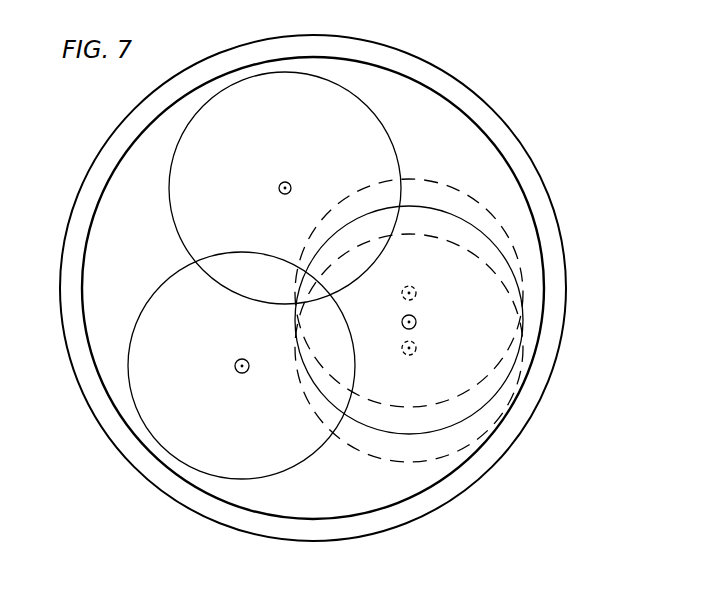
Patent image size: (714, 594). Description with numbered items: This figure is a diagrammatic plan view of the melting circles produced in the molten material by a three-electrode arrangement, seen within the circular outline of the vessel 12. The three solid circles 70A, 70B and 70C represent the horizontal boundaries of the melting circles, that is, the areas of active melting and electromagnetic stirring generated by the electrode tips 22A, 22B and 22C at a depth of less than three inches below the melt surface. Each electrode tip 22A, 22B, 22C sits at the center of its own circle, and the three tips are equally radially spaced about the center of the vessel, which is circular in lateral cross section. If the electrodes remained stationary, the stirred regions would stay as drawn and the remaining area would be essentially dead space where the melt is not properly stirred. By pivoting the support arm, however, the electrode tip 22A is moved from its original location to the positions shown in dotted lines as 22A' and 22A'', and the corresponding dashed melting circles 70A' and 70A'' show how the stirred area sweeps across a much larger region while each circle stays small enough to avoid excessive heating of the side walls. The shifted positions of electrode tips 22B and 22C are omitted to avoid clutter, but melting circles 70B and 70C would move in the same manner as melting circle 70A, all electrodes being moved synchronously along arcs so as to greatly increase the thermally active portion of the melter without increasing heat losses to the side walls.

The housing 12 is at (465, 82).
The melting circle 70A is at (454, 320).
The melting circle 70A' is at (422, 363).
The melting circle 70A'' is at (448, 291).
The melting circle 70B is at (240, 82).
The melting circle 70C is at (128, 372).
The electrode tip 22A is at (441, 323).
The electrode tip location 22A' is at (445, 352).
The electrode tip location 22A'' is at (448, 293).
The electrode tip 22B is at (279, 188).
The electrode tip 22C is at (237, 374).